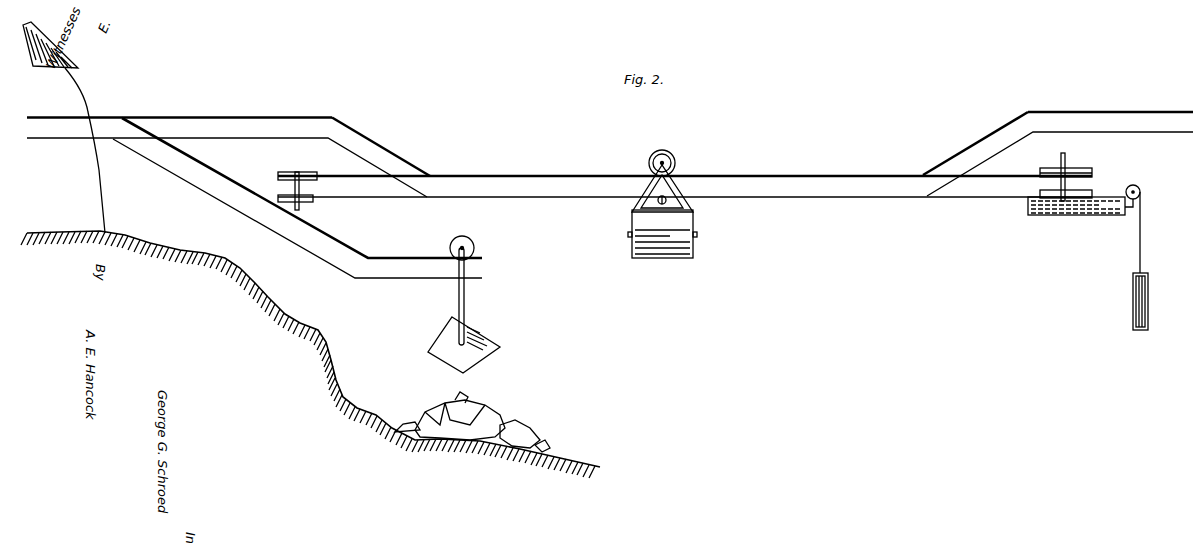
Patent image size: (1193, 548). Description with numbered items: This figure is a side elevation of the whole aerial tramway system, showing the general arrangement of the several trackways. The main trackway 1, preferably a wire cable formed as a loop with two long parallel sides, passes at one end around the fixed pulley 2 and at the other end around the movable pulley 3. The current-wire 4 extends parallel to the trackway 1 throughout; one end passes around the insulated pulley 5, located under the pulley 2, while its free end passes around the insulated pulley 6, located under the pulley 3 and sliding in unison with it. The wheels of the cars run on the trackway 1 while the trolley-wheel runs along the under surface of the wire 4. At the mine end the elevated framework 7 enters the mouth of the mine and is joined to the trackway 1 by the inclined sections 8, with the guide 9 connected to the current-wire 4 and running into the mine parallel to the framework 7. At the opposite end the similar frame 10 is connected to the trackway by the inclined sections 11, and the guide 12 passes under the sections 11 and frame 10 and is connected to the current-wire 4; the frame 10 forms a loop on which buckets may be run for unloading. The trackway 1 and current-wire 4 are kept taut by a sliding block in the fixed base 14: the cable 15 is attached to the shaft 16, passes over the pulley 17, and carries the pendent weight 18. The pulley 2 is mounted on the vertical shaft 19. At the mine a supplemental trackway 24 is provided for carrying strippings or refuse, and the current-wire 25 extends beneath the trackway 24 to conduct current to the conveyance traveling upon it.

The trackway 1 is at (852, 175).
The fixed pulley 2 is at (280, 172).
The movable pulley 3 is at (1083, 167).
The current-wire 4 is at (886, 196).
The insulated pulley 5 is at (308, 201).
The insulated pulley 6 is at (1093, 188).
The framework 7 is at (229, 117).
The inclined sections 8 is at (371, 140).
The guide 9 is at (247, 138).
The frame 10 is at (1110, 103).
The inclined sections 11 is at (981, 140).
The guide 12 is at (1154, 133).
The fixed base 14 is at (1112, 207).
The cable 15 is at (1136, 186).
The shaft 16 is at (1044, 177).
The pulley 17 is at (1141, 192).
The pendent weight 18 is at (1150, 292).
The vertical shaft 19 is at (301, 185).
The supplemental trackway 24 is at (351, 247).
The current-wire 25 is at (323, 259).